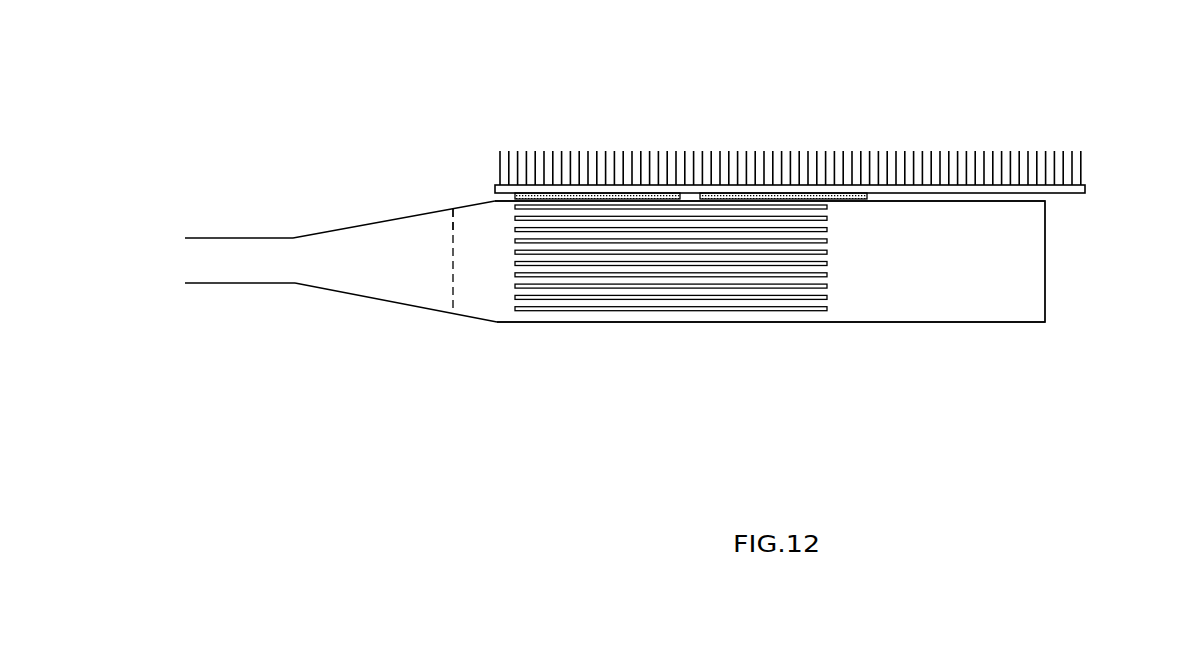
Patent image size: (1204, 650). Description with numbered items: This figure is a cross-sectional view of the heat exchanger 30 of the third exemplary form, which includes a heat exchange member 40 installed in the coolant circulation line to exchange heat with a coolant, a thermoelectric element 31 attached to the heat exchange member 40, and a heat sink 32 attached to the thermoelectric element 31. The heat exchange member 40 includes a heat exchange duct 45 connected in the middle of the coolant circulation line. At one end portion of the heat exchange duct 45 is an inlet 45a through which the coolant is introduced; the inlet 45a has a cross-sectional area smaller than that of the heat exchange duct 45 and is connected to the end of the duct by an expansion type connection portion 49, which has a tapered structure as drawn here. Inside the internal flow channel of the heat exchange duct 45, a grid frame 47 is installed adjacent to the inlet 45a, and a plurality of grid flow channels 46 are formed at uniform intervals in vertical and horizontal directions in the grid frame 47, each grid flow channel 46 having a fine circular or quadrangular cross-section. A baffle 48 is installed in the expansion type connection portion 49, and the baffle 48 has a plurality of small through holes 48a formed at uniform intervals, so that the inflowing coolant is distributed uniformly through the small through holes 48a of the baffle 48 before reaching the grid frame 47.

The heat exchanger 30 is at (320, 34).
The thermoelectric element 31 is at (599, 197).
The heat sink 32 is at (1085, 167).
The heat exchange member 40 is at (770, 308).
The heat exchange duct 45 is at (615, 295).
The inlet 45a is at (237, 285).
The grid flow channels 46 is at (588, 319).
The grid frame 47 is at (850, 238).
The baffle 48 is at (453, 288).
The small through holes 48a is at (453, 222).
The expansion type connection portion 49 is at (366, 301).